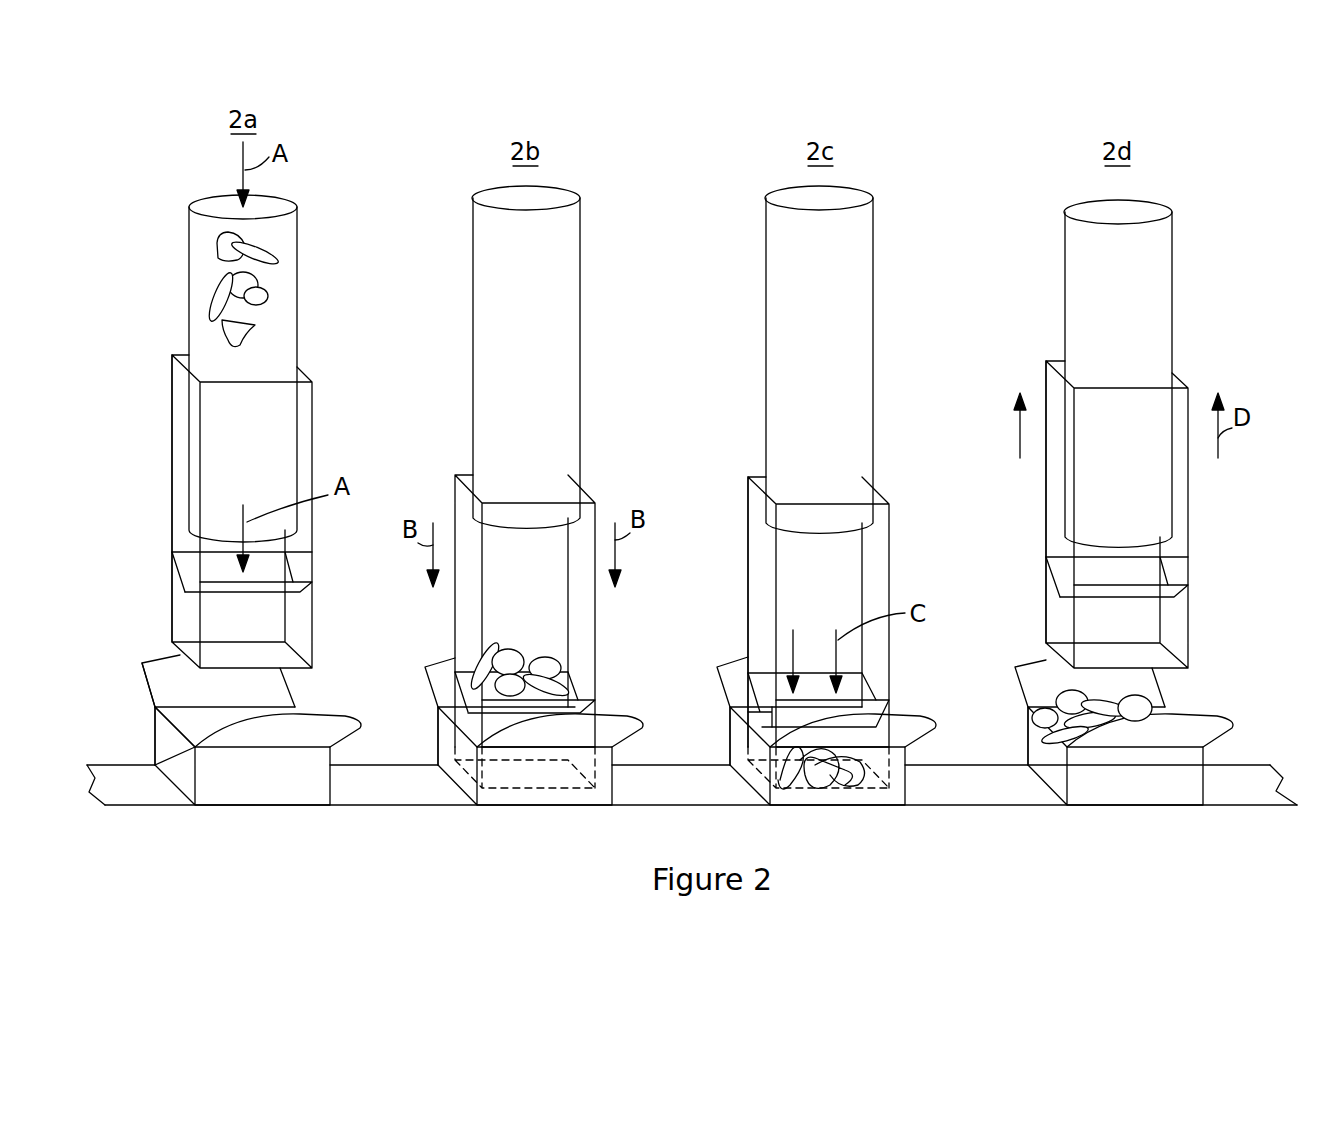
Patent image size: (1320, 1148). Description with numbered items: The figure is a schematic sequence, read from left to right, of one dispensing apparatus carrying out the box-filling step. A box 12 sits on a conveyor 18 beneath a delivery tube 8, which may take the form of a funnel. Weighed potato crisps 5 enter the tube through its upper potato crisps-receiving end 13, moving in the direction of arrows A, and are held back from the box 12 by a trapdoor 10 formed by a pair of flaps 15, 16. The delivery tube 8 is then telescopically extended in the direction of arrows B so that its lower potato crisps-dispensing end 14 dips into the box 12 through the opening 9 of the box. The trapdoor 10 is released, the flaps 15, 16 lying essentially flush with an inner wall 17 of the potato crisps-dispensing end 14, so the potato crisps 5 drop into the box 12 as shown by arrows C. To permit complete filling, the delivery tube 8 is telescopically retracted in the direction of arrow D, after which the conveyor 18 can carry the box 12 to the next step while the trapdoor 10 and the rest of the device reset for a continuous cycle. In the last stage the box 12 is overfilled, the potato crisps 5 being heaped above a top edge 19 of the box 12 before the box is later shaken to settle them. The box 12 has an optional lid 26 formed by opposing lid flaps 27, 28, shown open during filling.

The potato crisps 5 is at (215, 310).
The delivery tube 8 is at (283, 312).
The opening 9 is at (165, 697).
The trapdoor 10 is at (278, 570).
The box 12 is at (254, 788).
The potato crisps-receiving end 13 is at (297, 224).
The potato crisps-dispensing end 14 is at (312, 628).
The flap 15 is at (185, 567).
The flap 16 is at (210, 590).
The inner wall 17 is at (180, 512).
The conveyor 18 is at (1247, 785).
The top edge 19 is at (165, 714).
The lid 26 is at (150, 661).
The lid flap 27 is at (219, 697).
The lid flap 28 is at (317, 741).